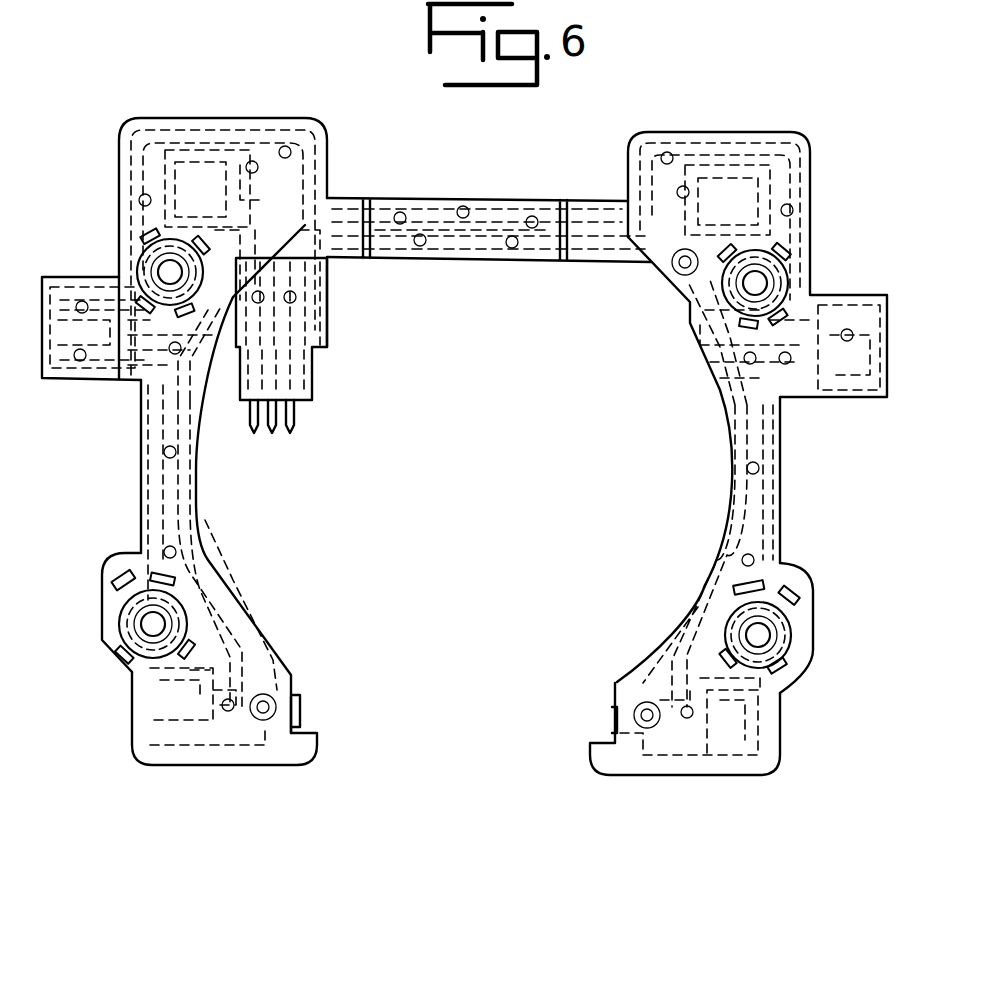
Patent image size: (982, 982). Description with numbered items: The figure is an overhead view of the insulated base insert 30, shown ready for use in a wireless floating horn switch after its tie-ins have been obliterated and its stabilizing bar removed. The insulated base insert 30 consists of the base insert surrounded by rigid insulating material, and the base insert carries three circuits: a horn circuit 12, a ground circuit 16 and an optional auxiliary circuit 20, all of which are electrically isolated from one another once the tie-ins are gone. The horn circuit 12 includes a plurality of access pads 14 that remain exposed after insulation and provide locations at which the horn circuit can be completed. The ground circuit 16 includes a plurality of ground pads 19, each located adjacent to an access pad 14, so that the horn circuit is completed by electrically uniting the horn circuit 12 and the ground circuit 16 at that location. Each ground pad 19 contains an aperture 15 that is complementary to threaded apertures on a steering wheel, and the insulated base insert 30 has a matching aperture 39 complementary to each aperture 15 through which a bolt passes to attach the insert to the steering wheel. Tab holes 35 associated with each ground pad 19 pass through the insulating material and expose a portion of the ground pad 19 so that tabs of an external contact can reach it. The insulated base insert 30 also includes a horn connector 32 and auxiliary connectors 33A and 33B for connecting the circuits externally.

The horn circuit 12 is at (195, 482).
The access pads 14 is at (165, 735).
The aperture 15 is at (148, 630).
The ground circuit 16 is at (145, 463).
The ground pads 19 is at (118, 607).
The auxiliary circuit 20 is at (128, 157).
The insulated base insert 30 is at (643, 777).
The horn connector 32 is at (64, 277).
The auxiliary connector 33A is at (846, 293).
The auxiliary connector 33B is at (302, 402).
The tab holes 35 is at (120, 574).
The aperture 39 is at (758, 637).